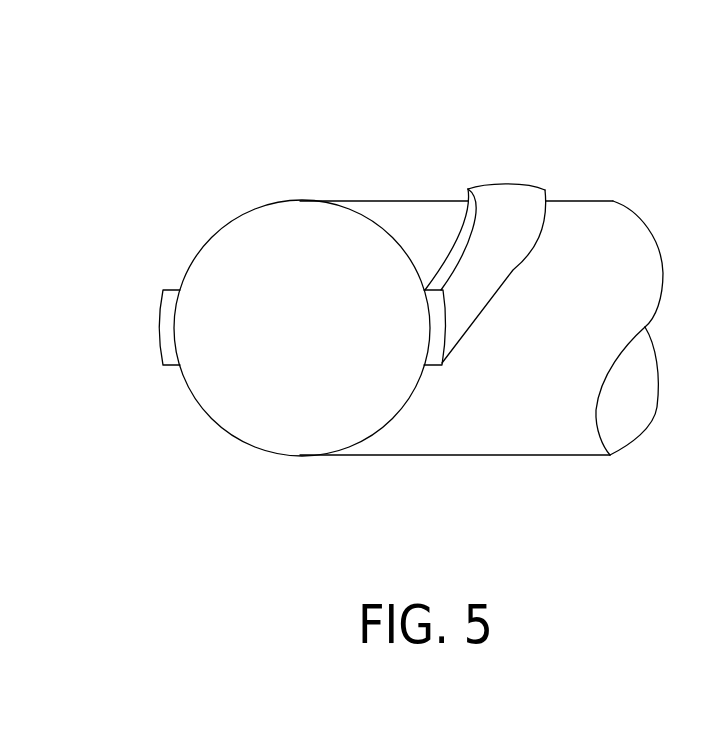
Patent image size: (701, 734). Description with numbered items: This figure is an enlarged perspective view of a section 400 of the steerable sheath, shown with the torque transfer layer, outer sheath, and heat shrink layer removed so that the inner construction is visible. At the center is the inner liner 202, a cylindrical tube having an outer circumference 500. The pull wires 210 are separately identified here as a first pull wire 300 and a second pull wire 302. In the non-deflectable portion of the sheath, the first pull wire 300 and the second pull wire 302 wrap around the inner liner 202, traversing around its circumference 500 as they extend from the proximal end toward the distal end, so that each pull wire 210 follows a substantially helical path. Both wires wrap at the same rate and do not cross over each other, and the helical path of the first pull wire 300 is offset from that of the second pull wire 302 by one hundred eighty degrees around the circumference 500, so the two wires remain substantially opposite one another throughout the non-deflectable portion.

The section 400 is at (150, 117).
The inner liner 202 is at (579, 200).
The outer circumference 500 is at (256, 208).
The pull wires 210 is at (334, 215).
The first pull wire 300 is at (163, 290).
The second pull wire 302 is at (495, 197).